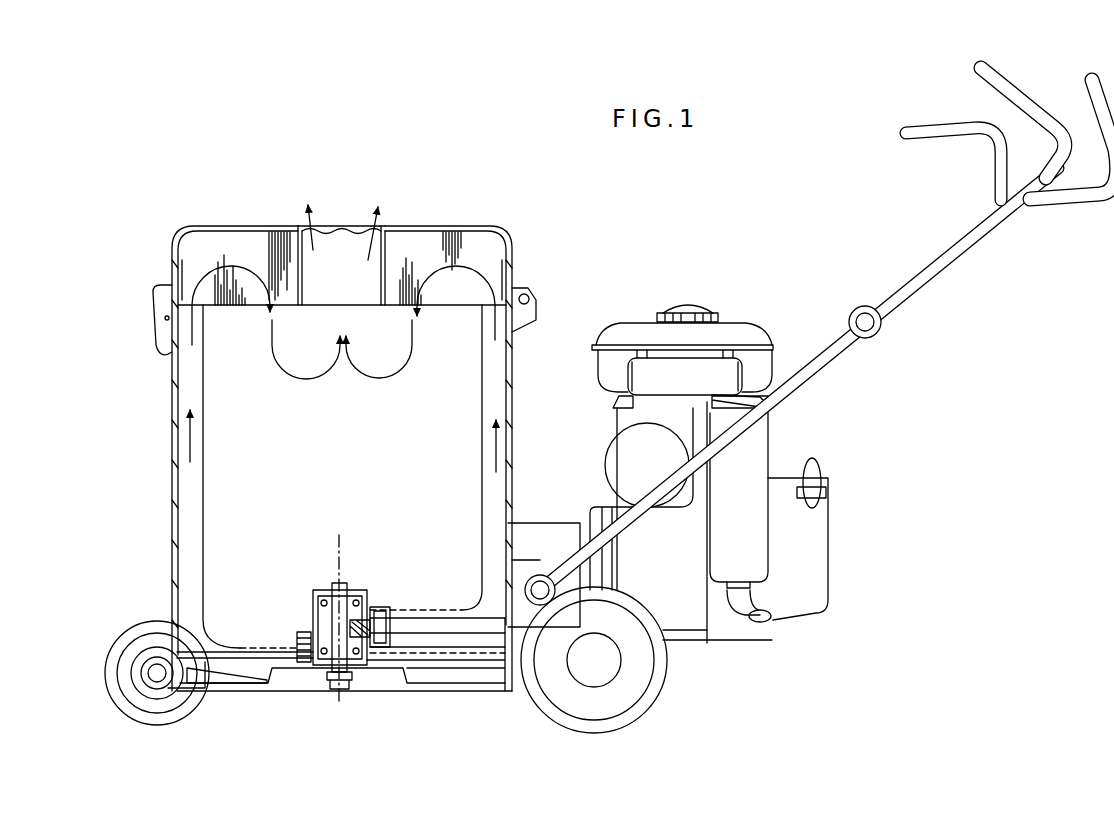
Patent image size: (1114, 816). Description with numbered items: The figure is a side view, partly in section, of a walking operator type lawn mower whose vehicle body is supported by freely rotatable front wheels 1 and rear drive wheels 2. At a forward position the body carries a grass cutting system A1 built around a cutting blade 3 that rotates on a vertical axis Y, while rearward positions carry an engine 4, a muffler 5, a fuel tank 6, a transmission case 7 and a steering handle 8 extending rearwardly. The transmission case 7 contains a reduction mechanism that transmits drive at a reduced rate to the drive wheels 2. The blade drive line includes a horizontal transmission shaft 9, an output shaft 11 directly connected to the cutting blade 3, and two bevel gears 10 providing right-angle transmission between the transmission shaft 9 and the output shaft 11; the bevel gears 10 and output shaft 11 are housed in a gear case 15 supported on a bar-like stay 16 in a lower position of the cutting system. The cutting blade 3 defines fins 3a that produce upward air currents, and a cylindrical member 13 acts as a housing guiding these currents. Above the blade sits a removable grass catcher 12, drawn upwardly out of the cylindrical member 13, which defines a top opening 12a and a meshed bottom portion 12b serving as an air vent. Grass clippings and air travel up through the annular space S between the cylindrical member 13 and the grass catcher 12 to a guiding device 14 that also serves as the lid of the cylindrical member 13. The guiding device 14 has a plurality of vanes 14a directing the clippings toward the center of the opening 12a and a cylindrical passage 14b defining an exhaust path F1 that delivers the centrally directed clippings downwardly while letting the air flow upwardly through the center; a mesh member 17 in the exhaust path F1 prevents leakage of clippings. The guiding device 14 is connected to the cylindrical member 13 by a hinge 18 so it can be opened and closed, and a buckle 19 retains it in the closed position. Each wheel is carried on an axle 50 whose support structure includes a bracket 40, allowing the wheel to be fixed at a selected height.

The front wheels 1 is at (127, 627).
The rear drive wheels 2 is at (650, 710).
The cutting blade 3 is at (240, 684).
The fins 3a is at (205, 676).
The engine 4 is at (695, 613).
The muffler 5 is at (772, 438).
The fuel tank 6 is at (748, 323).
The transmission case 7 is at (547, 523).
The steering handle 8 is at (932, 263).
The horizontal transmission shaft 9 is at (429, 625).
The bevel gears 10 is at (303, 630).
The output shaft 11 is at (340, 690).
The grass catcher 12 is at (203, 392).
The top opening 12a is at (280, 298).
The meshed bottom portion 12b is at (243, 646).
The cylindrical member 13 is at (175, 514).
The guiding device 14 is at (470, 227).
The vanes 14a is at (200, 232).
The cylindrical passage 14b is at (303, 277).
The gear case 15 is at (315, 591).
The bar-like stay 16 is at (443, 665).
The mesh member 17 is at (327, 224).
The hinge 18 is at (529, 296).
The buckle 19 is at (167, 293).
The bracket 40 is at (162, 690).
The axle 50 is at (155, 677).
The grass cutting system A1 is at (157, 455).
The exhaust path F1 is at (344, 247).
The annular space S is at (495, 371).
The vertical axis Y is at (339, 605).